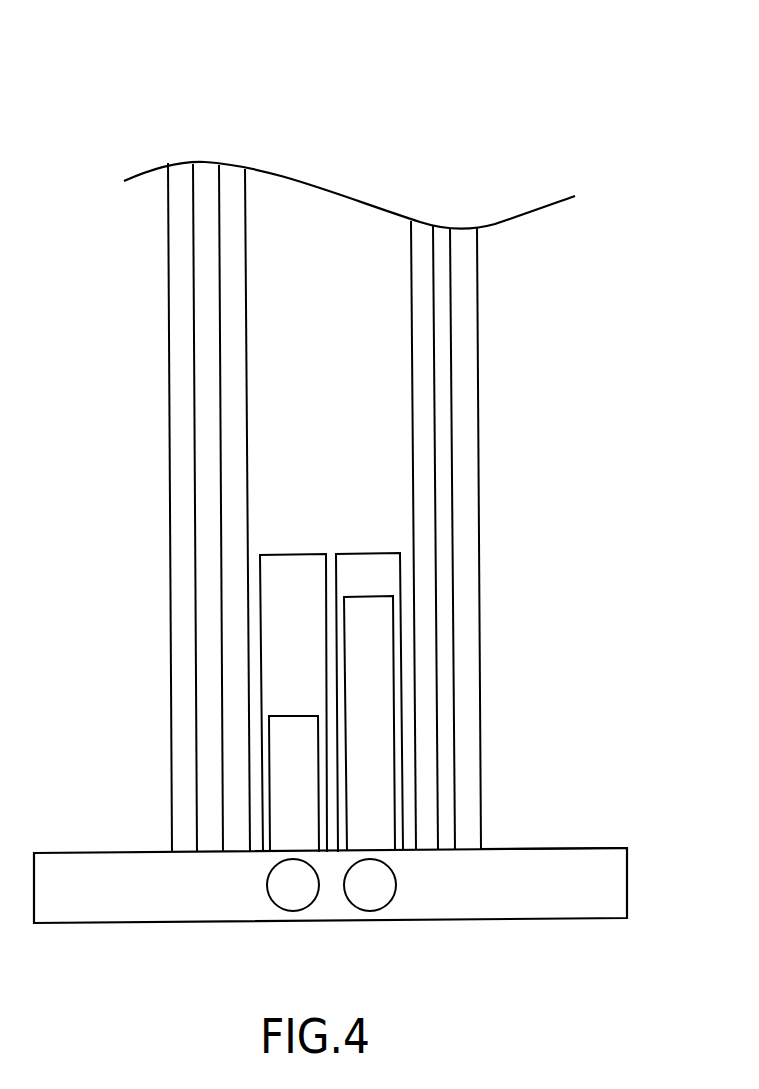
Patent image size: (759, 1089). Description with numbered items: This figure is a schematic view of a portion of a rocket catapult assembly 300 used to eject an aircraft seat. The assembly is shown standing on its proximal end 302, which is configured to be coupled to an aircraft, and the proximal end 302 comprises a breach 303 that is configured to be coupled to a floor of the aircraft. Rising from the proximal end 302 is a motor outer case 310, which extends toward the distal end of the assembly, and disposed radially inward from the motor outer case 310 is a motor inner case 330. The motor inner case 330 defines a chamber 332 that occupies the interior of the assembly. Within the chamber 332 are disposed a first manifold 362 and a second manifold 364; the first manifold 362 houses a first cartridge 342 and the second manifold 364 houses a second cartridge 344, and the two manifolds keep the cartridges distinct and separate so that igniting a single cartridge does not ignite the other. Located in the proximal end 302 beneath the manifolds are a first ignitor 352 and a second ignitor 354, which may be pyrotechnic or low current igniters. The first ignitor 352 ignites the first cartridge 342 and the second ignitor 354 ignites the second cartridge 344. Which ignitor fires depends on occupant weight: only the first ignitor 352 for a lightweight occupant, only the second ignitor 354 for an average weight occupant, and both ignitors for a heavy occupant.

The rocket catapult assembly 300 is at (566, 97).
The proximal end 302 is at (562, 873).
The breach 303 is at (548, 862).
The motor outer case 310 is at (178, 462).
The motor inner case 330 is at (230, 595).
The chamber 332 is at (348, 438).
The first cartridge 342 is at (305, 797).
The second cartridge 344 is at (368, 782).
The first ignitor 352 is at (295, 892).
The second ignitor 354 is at (370, 892).
The first manifold 362 is at (283, 678).
The second manifold 364 is at (385, 563).